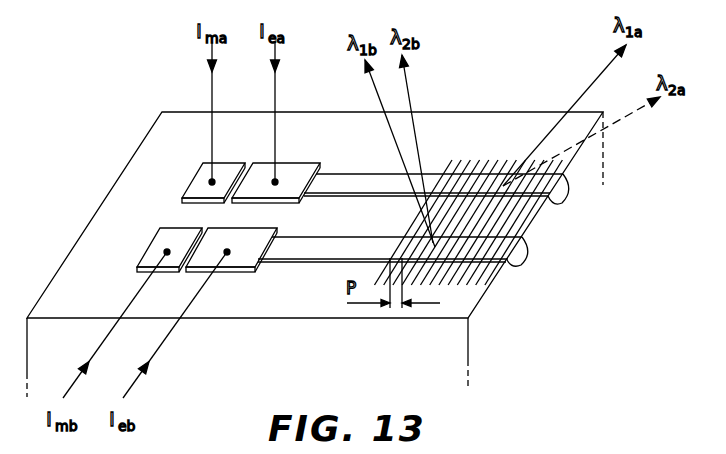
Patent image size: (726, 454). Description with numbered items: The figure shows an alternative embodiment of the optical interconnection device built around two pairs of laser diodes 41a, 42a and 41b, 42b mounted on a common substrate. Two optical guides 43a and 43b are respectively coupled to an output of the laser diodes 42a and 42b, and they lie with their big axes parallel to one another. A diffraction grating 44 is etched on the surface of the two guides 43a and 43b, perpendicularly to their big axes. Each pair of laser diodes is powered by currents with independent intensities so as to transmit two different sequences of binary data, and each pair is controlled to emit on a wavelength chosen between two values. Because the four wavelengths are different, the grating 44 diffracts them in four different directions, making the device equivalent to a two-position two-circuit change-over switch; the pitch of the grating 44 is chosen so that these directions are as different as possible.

The laser diode 41a is at (198, 173).
The laser diode 42a is at (302, 163).
The laser diode 41b is at (154, 242).
The laser diode 42b is at (239, 262).
The optical guide 43a is at (559, 204).
The optical guide 43b is at (518, 266).
The diffraction grating 44 is at (448, 282).